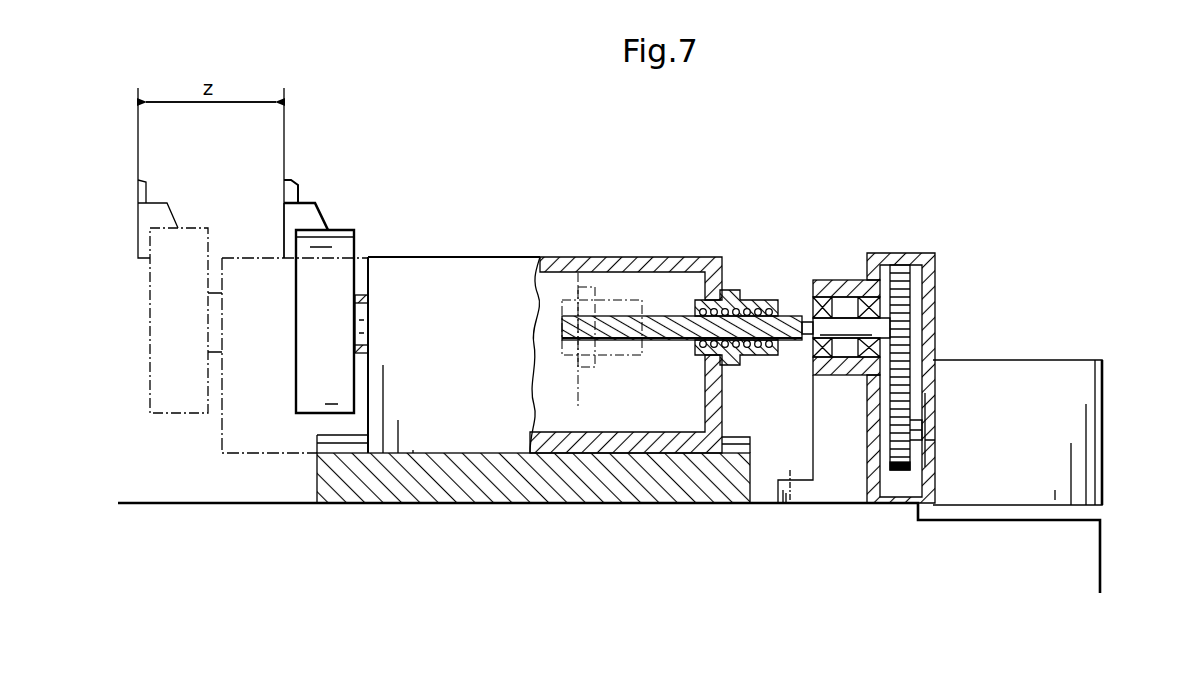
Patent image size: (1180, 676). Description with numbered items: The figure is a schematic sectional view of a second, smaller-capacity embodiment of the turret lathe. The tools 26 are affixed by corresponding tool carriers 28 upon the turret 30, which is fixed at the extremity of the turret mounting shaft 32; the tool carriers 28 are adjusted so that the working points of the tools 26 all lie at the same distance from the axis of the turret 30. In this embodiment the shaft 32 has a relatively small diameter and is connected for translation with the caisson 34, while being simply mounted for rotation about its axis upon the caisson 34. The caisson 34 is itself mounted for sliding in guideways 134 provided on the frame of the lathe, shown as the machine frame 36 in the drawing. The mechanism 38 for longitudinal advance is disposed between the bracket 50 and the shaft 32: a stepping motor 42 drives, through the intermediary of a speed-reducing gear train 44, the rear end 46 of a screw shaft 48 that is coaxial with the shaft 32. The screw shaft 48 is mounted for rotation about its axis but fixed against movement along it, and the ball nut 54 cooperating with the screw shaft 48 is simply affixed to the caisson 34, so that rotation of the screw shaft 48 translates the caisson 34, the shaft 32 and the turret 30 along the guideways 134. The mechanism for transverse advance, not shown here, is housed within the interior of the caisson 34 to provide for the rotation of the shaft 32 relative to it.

The tool 26 is at (289, 195).
The tool carrier 28 is at (290, 218).
The turret 30 is at (330, 237).
The turret mounting shaft 32 is at (366, 321).
The caisson 34 is at (717, 408).
The machine frame 36 is at (1088, 551).
The mechanism for longitudinal advance 38 is at (937, 355).
The stepping motor 42 is at (1071, 370).
The speed-reducing gear train 44 is at (915, 267).
The rear end of screw shaft 46 is at (845, 338).
The screw shaft 48 is at (683, 322).
The bracket 50 is at (840, 498).
The ball nut 54 is at (771, 303).
The guideways 134 is at (514, 494).